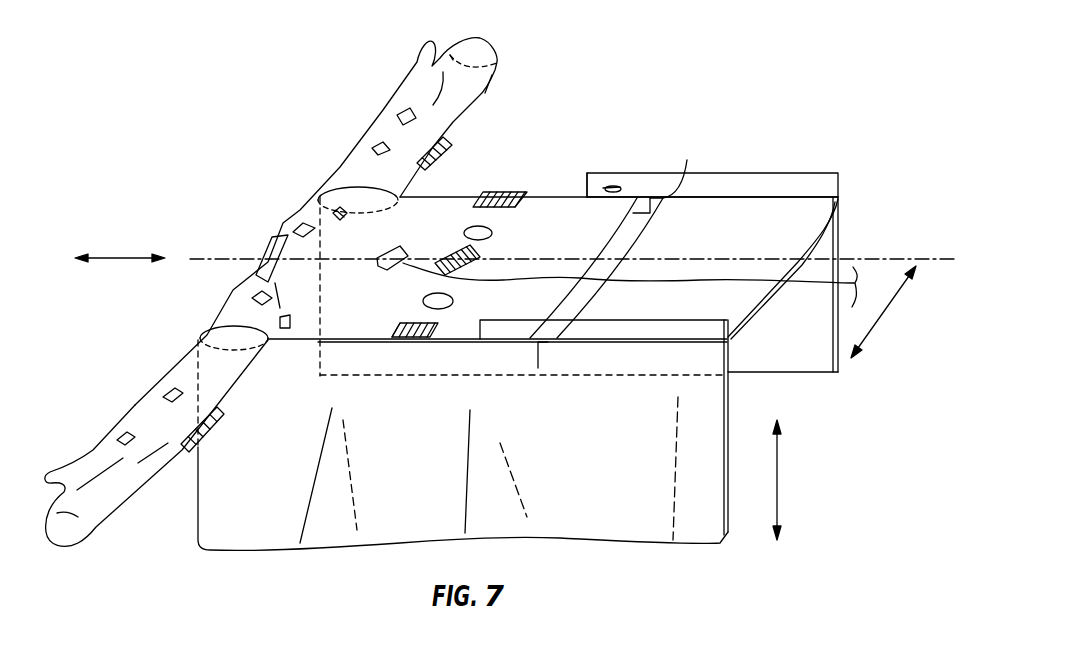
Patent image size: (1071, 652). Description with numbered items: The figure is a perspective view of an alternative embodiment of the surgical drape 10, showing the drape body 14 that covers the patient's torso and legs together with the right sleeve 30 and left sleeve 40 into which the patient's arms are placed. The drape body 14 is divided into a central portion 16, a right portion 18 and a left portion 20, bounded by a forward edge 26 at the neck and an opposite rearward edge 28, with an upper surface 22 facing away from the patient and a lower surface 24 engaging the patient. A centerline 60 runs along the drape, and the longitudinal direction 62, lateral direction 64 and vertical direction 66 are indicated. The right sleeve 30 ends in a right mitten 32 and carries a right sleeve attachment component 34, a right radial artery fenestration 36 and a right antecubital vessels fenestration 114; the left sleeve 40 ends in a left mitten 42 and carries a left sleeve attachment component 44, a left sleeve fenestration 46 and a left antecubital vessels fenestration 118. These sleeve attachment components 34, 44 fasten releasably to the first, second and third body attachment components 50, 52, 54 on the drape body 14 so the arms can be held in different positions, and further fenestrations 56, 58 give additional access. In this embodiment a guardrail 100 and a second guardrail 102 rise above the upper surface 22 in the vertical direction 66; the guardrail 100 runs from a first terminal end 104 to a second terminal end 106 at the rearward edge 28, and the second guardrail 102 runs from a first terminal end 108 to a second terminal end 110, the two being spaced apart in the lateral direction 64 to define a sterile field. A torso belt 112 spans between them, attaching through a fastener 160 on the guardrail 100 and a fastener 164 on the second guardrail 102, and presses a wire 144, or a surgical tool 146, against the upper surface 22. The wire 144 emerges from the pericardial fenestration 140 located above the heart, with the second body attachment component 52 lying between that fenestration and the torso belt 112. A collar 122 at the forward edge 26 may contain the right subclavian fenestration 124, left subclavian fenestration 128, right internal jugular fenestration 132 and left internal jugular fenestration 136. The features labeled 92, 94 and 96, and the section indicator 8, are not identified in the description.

The surgical drape 10 is at (250, 112).
The drape body 14 is at (767, 236).
The central portion 16 is at (712, 226).
The right portion 18 is at (594, 506).
The left portion 20 is at (840, 368).
The upper surface 22 is at (428, 208).
The lower surface 24 is at (829, 350).
The forward edge 26 is at (272, 236).
The rearward edge 28 is at (840, 213).
The right sleeve 30 is at (230, 370).
The right mitten 32 is at (77, 533).
The right sleeve attachment component 34 is at (186, 447).
The right radial artery fenestration 36 is at (118, 437).
The left sleeve 40 is at (489, 96).
The left mitten 42 is at (490, 42).
The left sleeve attachment component 44 is at (449, 153).
The left sleeve fenestration 46 is at (396, 113).
The first body attachment component 50 is at (394, 337).
The second body attachment component 52 is at (480, 254).
The third body attachment component 54 is at (515, 193).
The fenestration 56 is at (453, 299).
The fenestration 58 is at (492, 230).
The centerline 60 is at (900, 258).
The longitudinal direction 62 is at (132, 258).
The lateral direction 64 is at (876, 324).
The vertical direction 66 is at (778, 458).
The attachment edge 92 is at (412, 340).
The attachment region 94 is at (458, 248).
The attachment region 96 is at (511, 193).
The guardrail 100 is at (620, 323).
The second guardrail 102 is at (703, 176).
The first terminal end 104 is at (470, 338).
The second terminal end 106 is at (728, 337).
The first terminal end 108 is at (587, 175).
The second terminal end 110 is at (841, 182).
The torso belt 112 is at (633, 240).
The right antecubital vessels fenestration 114 is at (165, 392).
The left antecubital vessels fenestration 118 is at (372, 147).
The collar 122 is at (262, 270).
The right subclavian fenestration 124 is at (290, 322).
The left subclavian fenestration 128 is at (347, 216).
The right internal jugular fenestration 132 is at (253, 297).
The left internal jugular fenestration 136 is at (293, 231).
The pericardial fenestration 140 is at (383, 262).
The wire 144 is at (674, 283).
The surgical tool 146 is at (592, 186).
The fastener 160 is at (543, 343).
The fastener 164 is at (676, 166).
The section view indicator 8 is at (633, 213).